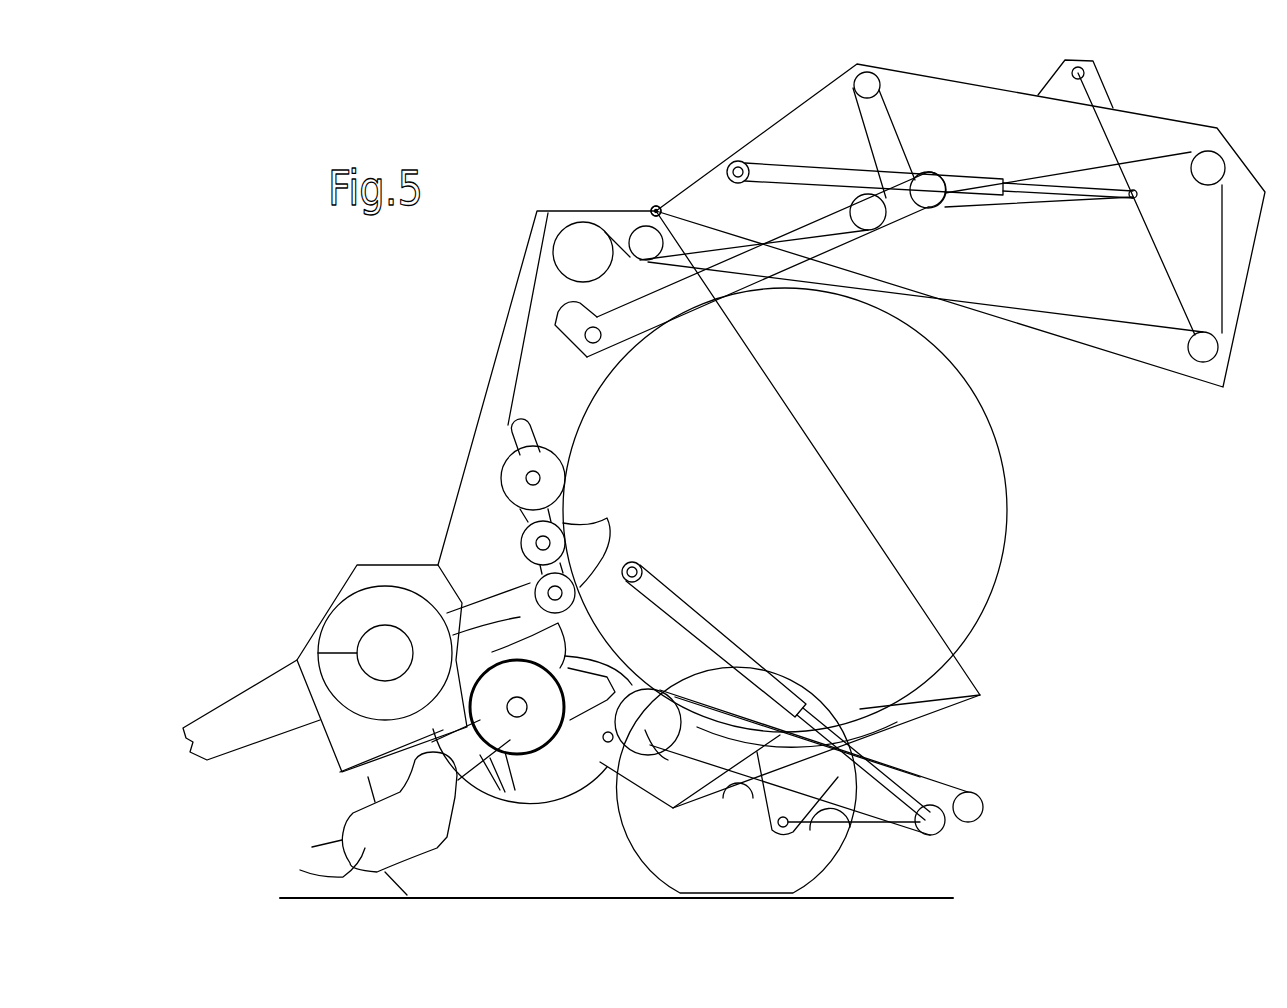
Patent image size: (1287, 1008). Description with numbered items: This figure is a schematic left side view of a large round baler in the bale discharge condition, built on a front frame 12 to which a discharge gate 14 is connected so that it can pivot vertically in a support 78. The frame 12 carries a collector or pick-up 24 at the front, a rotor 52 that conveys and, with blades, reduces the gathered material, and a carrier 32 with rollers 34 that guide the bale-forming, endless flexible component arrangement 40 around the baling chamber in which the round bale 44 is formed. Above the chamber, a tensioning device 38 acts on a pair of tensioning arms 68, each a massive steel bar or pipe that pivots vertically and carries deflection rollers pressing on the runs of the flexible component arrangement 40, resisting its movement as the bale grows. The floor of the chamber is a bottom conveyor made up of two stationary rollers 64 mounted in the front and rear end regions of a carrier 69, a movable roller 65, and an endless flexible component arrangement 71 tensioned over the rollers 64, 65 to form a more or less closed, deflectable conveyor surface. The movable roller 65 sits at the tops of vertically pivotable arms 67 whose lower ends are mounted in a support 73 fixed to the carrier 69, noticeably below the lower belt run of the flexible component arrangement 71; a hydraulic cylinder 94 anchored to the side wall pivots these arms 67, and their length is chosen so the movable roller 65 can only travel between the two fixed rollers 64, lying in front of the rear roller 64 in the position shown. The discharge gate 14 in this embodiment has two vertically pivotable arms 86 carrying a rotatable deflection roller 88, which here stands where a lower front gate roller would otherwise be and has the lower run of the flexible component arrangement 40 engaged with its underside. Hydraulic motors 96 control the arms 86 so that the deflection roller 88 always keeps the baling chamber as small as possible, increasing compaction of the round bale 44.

The front frame 12 is at (495, 295).
The discharge gate 14 is at (1033, 340).
The collector or pick-up 24 is at (360, 867).
The carrier 32 is at (530, 517).
The rollers 34 is at (510, 488).
The tensioning device 38 is at (836, 228).
The bale-forming flexible component arrangement 40 is at (977, 302).
The round bale 44 is at (985, 520).
The rotor 52 is at (458, 780).
The stationary rollers 64 is at (652, 752).
The movable roller 65 is at (973, 805).
The arms 67 is at (833, 830).
The tensioning arms 68 is at (630, 327).
The carrier 69 is at (715, 732).
The endless flexible component arrangement 71 is at (913, 772).
The support 73 is at (773, 833).
The support 78 is at (652, 211).
The vertically pivotable arms 86 is at (1123, 147).
The deflection roller 88 is at (1203, 362).
The hydraulic cylinder 94 is at (763, 665).
The hydraulic motors 96 is at (965, 177).